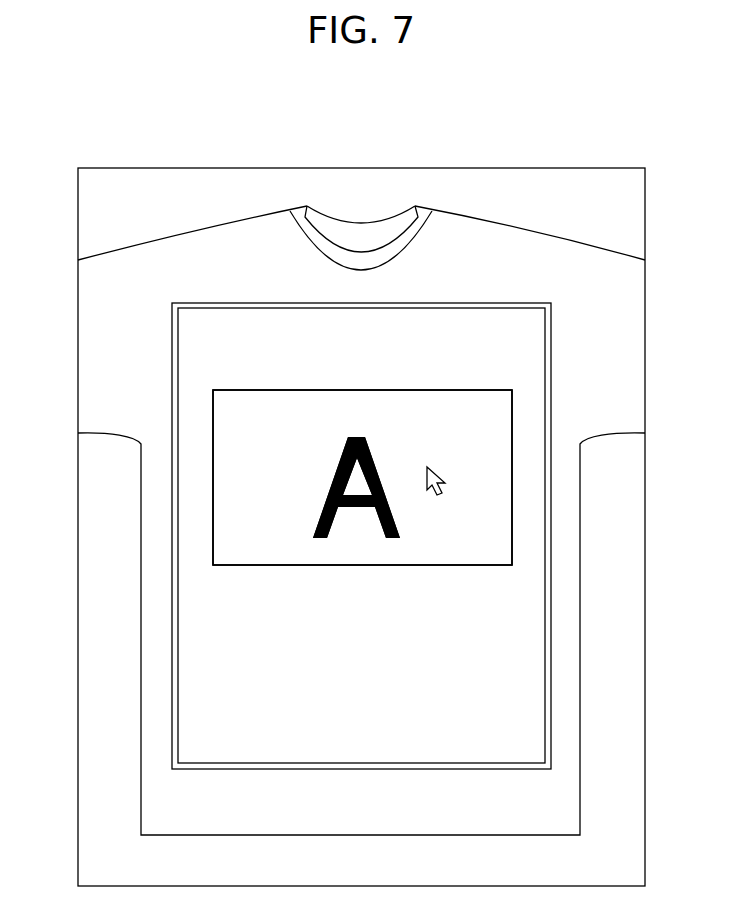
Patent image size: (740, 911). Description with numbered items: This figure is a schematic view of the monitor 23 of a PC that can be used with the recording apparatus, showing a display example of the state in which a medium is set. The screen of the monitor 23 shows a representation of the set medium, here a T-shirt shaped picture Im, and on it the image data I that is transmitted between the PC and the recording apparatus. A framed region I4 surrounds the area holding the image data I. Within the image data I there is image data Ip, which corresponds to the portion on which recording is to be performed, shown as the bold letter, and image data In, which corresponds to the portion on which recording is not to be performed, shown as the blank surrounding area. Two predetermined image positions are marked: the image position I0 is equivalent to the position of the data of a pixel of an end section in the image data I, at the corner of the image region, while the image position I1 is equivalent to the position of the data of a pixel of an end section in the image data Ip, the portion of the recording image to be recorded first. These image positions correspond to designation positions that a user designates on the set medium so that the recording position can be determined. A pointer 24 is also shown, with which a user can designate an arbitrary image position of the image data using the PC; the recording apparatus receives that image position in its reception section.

The monitor 23 is at (566, 153).
The pointer 24 is at (447, 487).
The medium image Im is at (457, 243).
The frame image I4 is at (258, 303).
The image position I0 is at (212, 388).
The image data I is at (512, 545).
The image position I1 is at (351, 430).
The image data Ip is at (317, 522).
The image data In is at (238, 470).